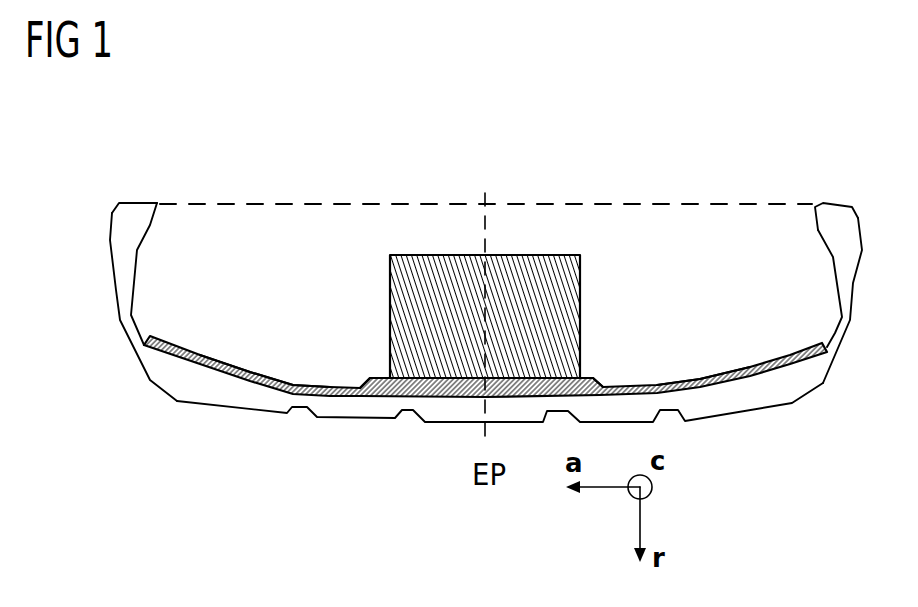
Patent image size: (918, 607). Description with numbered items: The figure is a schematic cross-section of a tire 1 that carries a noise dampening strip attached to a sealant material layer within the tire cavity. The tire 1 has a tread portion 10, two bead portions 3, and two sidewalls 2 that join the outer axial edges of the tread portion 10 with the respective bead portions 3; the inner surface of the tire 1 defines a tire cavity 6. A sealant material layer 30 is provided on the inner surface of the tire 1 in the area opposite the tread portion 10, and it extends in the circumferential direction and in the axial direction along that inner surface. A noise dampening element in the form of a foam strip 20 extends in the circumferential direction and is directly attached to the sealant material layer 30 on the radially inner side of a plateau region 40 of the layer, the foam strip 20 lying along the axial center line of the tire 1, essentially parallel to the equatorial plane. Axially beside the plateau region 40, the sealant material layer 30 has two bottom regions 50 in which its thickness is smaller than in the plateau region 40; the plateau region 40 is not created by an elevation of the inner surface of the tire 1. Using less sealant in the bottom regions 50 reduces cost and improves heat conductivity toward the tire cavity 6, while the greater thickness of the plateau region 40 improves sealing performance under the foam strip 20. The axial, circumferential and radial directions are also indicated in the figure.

The tire 1 is at (208, 182).
The sidewalls 2 is at (119, 319).
The bead portions 3 is at (98, 203).
The tire cavity 6 is at (723, 226).
The tread portion 10 is at (780, 405).
The foam strip 20 is at (583, 272).
The sealant material layer 30 is at (175, 346).
The plateau region 40 is at (595, 378).
The bottom regions 50 is at (264, 381).